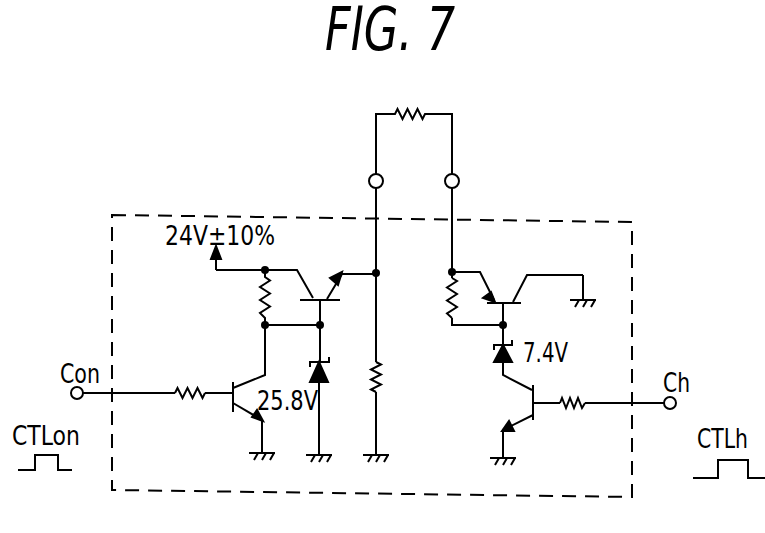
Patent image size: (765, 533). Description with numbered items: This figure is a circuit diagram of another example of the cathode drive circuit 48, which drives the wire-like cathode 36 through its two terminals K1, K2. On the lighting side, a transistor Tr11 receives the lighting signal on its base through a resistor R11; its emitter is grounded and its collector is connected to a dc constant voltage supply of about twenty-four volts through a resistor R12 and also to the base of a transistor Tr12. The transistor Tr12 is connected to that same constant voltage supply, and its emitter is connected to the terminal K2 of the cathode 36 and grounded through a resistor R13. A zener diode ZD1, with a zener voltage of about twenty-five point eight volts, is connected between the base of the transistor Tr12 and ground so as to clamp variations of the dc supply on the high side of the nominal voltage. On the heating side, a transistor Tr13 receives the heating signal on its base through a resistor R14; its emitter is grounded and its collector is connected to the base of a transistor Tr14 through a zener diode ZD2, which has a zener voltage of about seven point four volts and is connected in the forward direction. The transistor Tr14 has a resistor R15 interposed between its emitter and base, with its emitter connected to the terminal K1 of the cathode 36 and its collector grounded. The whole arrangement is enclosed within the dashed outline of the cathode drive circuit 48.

The cathode 36 is at (414, 108).
The cathode drive circuit 48 is at (526, 221).
The terminal K1 is at (467, 181).
The terminal K2 is at (360, 181).
The resistor R11 is at (185, 379).
The resistor R12 is at (245, 297).
The resistor R13 is at (395, 377).
The resistor R14 is at (578, 418).
The resistor R15 is at (428, 298).
The transistor Tr11 is at (238, 385).
The transistor Tr12 is at (335, 283).
The transistor Tr13 is at (493, 408).
The transistor Tr14 is at (517, 284).
The zener diode ZD1 is at (335, 356).
The zener diode ZD2 is at (476, 353).